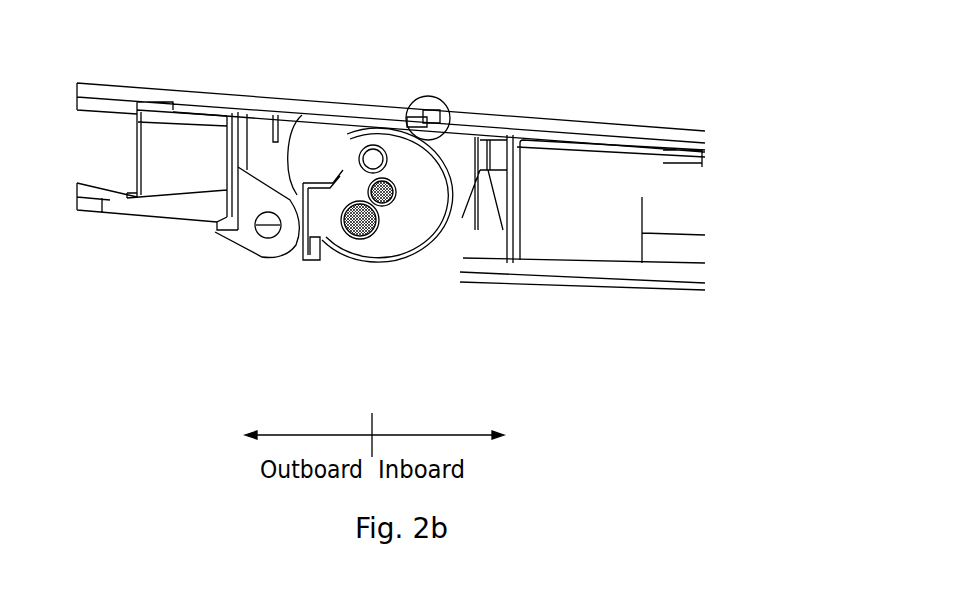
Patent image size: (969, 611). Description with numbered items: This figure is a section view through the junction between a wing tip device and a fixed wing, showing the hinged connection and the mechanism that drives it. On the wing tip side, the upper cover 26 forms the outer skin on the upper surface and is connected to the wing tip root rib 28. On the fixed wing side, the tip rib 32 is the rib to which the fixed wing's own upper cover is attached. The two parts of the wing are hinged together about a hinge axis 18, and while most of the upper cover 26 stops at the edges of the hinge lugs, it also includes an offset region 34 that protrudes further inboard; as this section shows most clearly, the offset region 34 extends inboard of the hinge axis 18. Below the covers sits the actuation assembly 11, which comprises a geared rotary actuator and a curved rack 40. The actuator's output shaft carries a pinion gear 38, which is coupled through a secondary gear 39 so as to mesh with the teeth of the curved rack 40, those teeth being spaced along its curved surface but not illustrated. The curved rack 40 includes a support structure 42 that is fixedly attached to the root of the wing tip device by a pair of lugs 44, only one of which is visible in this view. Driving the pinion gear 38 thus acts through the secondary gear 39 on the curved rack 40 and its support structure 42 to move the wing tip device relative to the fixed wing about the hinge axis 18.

The actuation assembly 11 is at (308, 289).
The hinge axis 18 is at (375, 160).
The upper cover 26 is at (103, 90).
The wing tip root rib 28 is at (227, 188).
The tip rib 32 is at (500, 197).
The offset region 34 is at (405, 108).
The pinion gear 38 is at (384, 195).
The secondary gear 39 is at (362, 222).
The curved rack 40 is at (460, 187).
The support structure 42 is at (323, 247).
The lug 44 is at (278, 242).